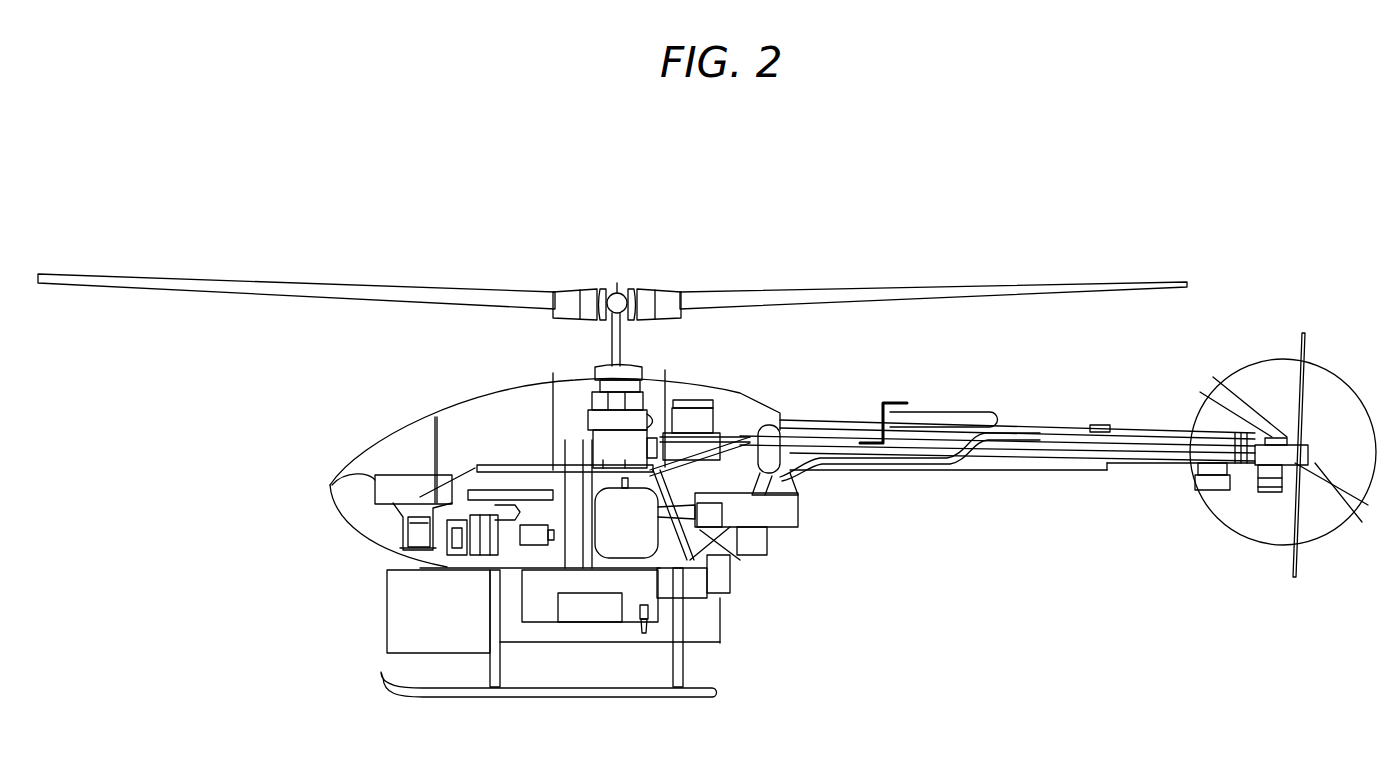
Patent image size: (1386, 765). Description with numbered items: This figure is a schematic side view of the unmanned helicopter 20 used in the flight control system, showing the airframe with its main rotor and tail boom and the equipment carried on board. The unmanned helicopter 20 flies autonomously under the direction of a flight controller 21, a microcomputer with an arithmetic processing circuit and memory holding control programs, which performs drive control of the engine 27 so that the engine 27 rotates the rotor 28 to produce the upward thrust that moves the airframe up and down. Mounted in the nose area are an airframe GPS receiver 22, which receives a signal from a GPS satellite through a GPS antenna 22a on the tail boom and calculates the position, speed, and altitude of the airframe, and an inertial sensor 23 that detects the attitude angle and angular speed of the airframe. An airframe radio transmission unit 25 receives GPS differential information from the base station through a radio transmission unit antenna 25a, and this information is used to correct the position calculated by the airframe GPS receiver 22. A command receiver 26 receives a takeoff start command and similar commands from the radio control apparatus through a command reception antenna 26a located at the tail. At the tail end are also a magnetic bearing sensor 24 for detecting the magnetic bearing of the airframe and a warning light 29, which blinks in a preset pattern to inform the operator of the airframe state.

The unmanned helicopter 20 is at (652, 236).
The flight controller 21 is at (332, 485).
The airframe GPS receiver 22 is at (418, 528).
The GPS antenna 22a is at (1100, 425).
The inertial sensor 23 is at (416, 532).
The magnetic bearing sensor 24 is at (1215, 485).
The airframe radio transmission unit 25 is at (590, 622).
The radio transmission unit antenna 25a is at (650, 630).
The command receiver 26 is at (694, 400).
The command reception antenna 26a is at (1297, 575).
The engine 27 is at (438, 502).
The rotor 28 is at (901, 291).
The warning light 29 is at (1268, 495).